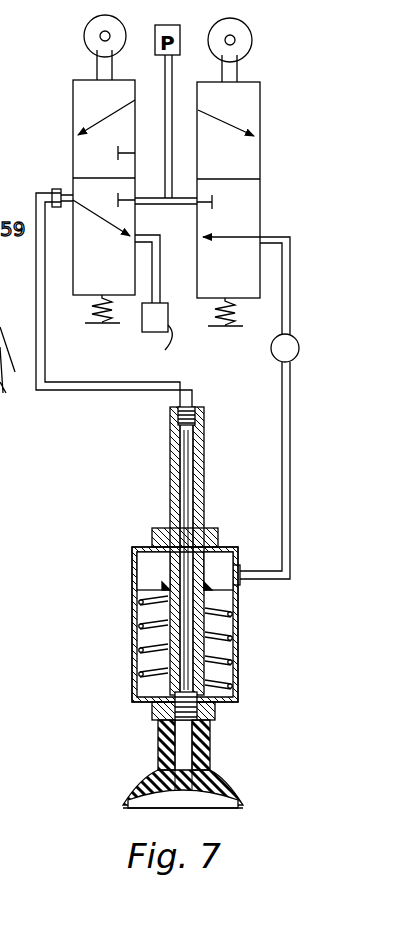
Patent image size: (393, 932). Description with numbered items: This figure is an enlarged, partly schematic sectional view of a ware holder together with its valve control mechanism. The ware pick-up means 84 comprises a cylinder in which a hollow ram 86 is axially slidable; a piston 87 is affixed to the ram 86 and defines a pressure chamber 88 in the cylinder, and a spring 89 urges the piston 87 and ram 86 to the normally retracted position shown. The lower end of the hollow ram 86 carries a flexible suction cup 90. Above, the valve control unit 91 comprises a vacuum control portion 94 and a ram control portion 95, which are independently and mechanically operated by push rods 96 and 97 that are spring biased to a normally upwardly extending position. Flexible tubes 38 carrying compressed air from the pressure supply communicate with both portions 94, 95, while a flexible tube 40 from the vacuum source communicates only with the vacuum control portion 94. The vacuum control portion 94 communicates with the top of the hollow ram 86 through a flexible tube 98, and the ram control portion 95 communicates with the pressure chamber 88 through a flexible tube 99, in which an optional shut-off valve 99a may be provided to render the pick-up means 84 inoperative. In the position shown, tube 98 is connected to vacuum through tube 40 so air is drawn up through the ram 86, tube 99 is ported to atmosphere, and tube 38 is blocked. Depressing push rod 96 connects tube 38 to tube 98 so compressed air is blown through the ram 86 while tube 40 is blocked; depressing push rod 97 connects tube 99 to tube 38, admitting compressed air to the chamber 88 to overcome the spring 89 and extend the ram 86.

The flexible tube 38 is at (165, 160).
The flexible tube 40 is at (160, 270).
The ware pick-up means 84 is at (181, 624).
The hollow ram 86 is at (170, 462).
The piston 87 is at (218, 590).
The pressure chamber 88 is at (162, 579).
The spring 89 is at (220, 622).
The flexible suction cup 90 is at (210, 772).
The valve control unit 91 is at (72, 169).
The vacuum control portion 94 is at (73, 91).
The ram control portion 95 is at (260, 96).
The push rod 96 is at (97, 62).
The push rod 97 is at (237, 66).
The flexible tube 98 is at (110, 392).
The flexible tube 99 is at (274, 411).
The shut-off valve 99a is at (271, 352).